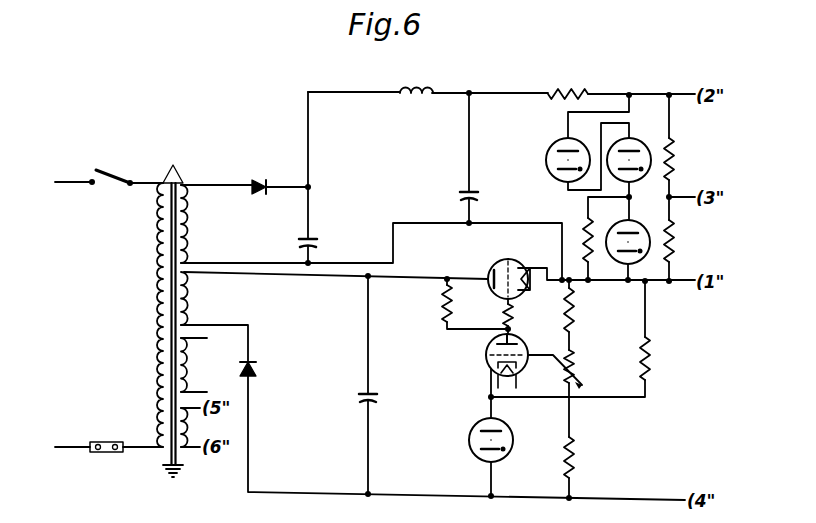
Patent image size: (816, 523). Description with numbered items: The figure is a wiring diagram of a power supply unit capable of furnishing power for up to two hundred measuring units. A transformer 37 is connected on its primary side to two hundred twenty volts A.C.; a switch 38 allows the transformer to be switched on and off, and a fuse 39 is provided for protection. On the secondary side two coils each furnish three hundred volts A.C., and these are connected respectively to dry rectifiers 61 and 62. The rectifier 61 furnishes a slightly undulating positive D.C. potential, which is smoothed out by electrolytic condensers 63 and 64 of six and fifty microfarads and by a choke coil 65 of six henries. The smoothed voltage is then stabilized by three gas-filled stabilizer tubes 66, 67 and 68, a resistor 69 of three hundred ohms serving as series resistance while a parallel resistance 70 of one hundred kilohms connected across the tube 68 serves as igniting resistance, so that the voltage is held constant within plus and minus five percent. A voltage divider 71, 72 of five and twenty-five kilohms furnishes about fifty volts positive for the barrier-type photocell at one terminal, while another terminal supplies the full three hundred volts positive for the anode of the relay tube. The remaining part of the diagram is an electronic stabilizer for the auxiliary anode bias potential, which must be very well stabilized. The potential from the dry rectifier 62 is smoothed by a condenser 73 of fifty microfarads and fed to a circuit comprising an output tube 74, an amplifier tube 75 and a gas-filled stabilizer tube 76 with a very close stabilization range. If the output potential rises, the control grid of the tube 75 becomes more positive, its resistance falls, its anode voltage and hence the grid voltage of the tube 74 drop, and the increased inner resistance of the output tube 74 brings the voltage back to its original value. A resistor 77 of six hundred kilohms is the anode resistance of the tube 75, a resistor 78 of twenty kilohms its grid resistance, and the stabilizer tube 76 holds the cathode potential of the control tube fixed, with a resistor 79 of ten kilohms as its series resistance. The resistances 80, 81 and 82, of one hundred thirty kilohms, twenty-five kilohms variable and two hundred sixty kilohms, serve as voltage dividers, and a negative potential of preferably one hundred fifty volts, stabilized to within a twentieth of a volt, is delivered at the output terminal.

The transformer 37 is at (174, 309).
The switch 38 is at (92, 175).
The fuse 39 is at (103, 456).
The dry rectifier 61 is at (258, 178).
The dry rectifier 62 is at (258, 370).
The electrolytic condenser 63 is at (297, 243).
The electrolytic condenser 64 is at (460, 194).
The choke coil 65 is at (402, 98).
The gas-filled stabilizer tube 66 is at (546, 160).
The gas-filled stabilizer tube 67 is at (640, 150).
The gas-filled stabilizer tube 68 is at (641, 232).
The resistor 69 is at (571, 91).
The parallel resistance 70 is at (580, 222).
The voltage divider resistor 71 is at (678, 232).
The voltage divider resistor 72 is at (678, 160).
The condenser 73 is at (356, 399).
The output tube 74 is at (495, 263).
The amplifier tube 75 is at (489, 366).
The gas-filled stabilizer tube 76 is at (470, 445).
The resistor 77 is at (440, 304).
The resistor 78 is at (516, 318).
The resistor 79 is at (654, 356).
The resistance 80 is at (578, 309).
The variable resistance 81 is at (576, 357).
The resistance 82 is at (561, 472).